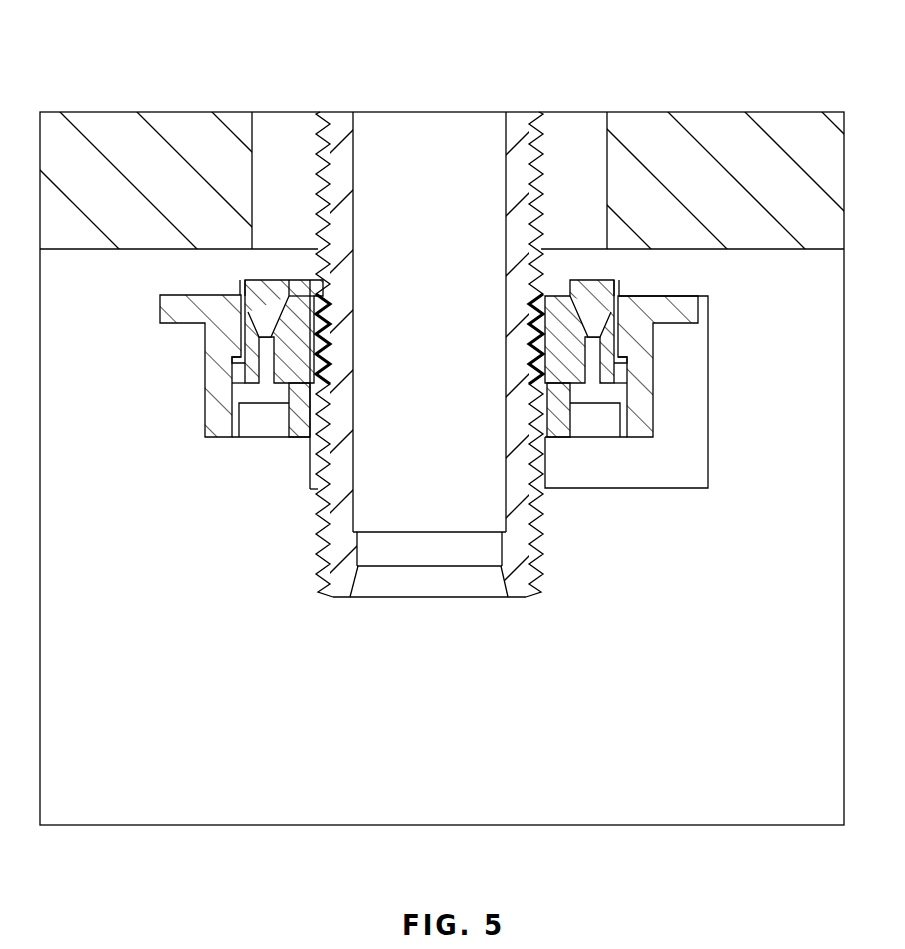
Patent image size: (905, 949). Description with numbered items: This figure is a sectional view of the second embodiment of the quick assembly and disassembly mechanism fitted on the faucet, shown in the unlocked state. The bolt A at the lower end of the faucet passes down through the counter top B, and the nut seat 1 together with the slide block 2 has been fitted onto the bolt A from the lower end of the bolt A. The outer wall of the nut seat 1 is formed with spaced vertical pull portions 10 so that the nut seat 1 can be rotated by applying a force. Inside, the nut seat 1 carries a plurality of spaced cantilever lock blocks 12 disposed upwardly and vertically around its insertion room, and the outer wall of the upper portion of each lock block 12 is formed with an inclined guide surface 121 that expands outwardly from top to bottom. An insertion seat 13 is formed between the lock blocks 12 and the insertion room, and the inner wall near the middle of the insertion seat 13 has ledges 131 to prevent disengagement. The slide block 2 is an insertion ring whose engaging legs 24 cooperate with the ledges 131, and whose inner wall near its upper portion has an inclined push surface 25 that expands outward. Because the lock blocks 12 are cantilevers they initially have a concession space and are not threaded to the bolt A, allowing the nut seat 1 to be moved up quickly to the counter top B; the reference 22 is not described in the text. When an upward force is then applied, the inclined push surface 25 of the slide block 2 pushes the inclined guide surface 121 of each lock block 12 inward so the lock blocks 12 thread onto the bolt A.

The nut seat 1 is at (688, 312).
The pull portion 10 is at (668, 470).
The cantilever lock block 12 is at (298, 427).
The insertion seat 13 is at (255, 395).
The inclined guide surface 121 is at (260, 302).
The ledge 131 is at (620, 350).
The slide block 2 is at (602, 288).
The V-groove 22 is at (258, 333).
The engaging leg 24 is at (233, 367).
The inclined push surface 25 is at (242, 310).
The bolt A is at (337, 548).
The counter top B is at (636, 135).